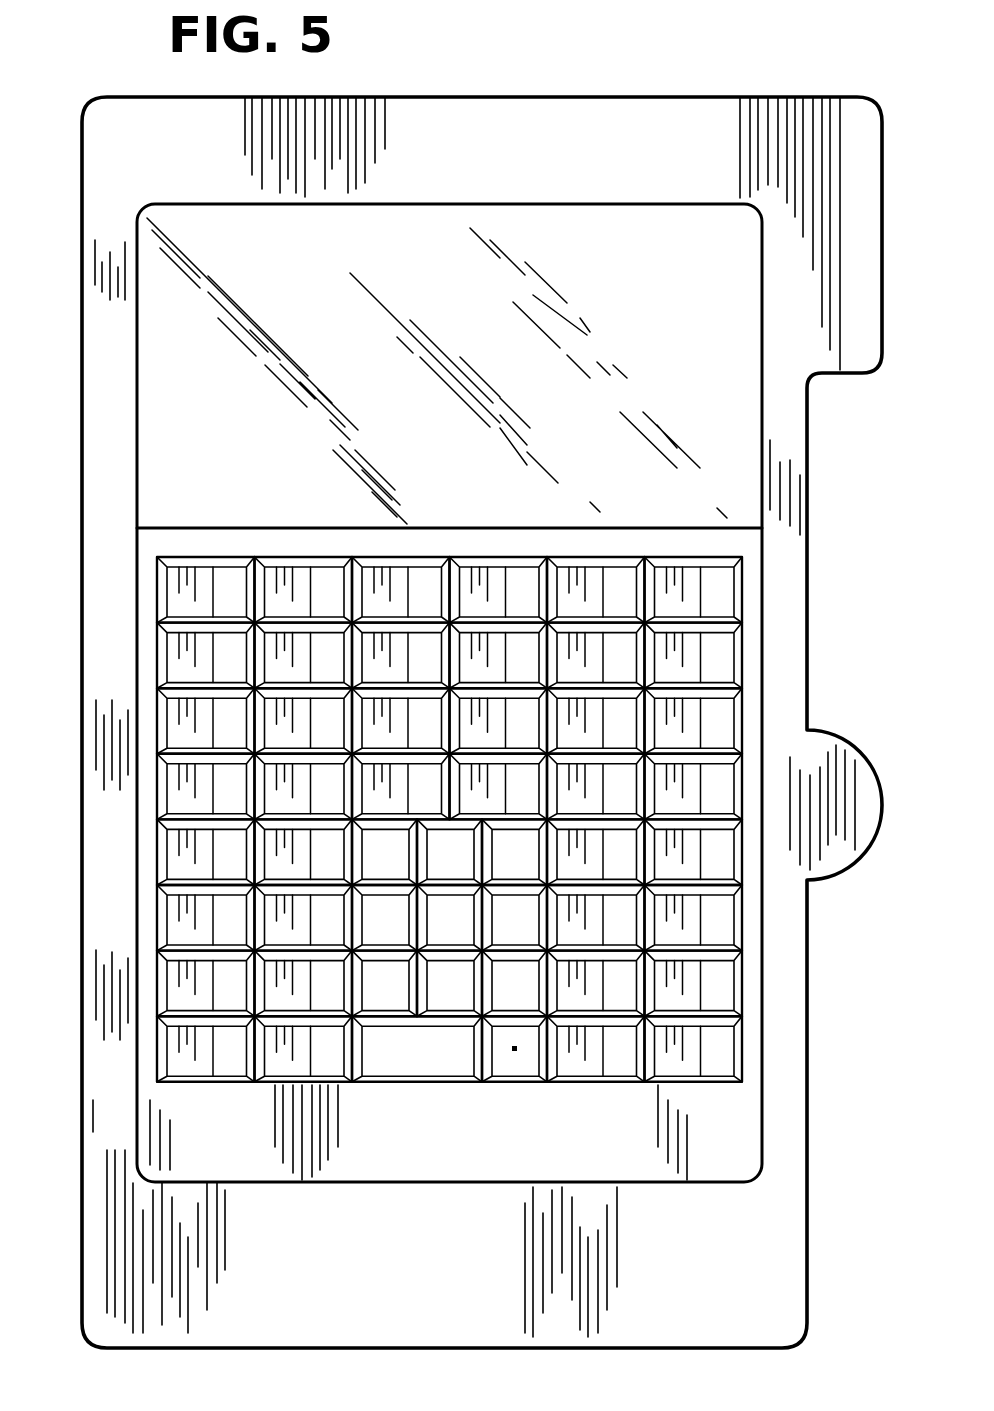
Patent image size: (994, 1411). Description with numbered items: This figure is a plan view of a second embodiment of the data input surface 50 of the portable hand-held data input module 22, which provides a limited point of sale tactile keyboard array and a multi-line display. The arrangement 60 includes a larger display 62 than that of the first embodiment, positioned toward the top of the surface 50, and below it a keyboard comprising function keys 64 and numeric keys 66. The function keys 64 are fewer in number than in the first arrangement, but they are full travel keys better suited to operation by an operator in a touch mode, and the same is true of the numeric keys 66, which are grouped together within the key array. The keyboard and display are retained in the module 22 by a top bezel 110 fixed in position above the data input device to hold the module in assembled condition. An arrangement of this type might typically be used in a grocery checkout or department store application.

The top bezel 110 is at (568, 97).
The portable hand-held data input module 22 is at (130, 870).
The surface 50 is at (150, 497).
The display 62 is at (745, 413).
The arrangement 60 is at (414, 839).
The function keys 64 is at (720, 603).
The numeric keys 66 is at (513, 1003).